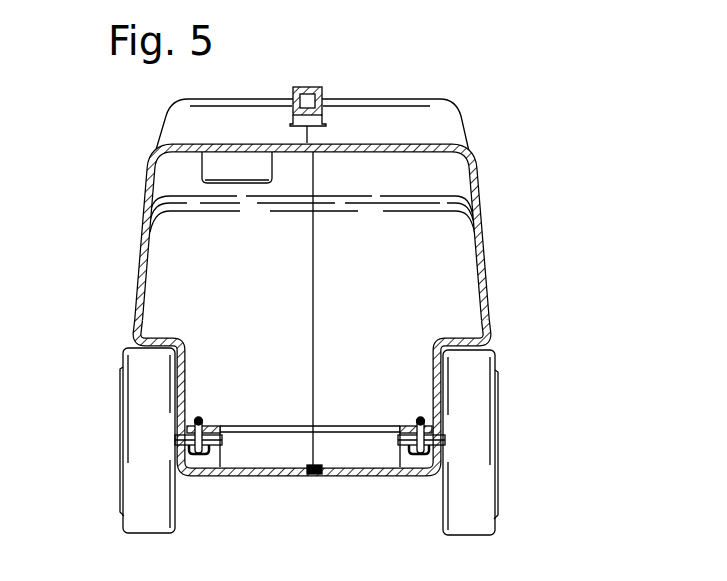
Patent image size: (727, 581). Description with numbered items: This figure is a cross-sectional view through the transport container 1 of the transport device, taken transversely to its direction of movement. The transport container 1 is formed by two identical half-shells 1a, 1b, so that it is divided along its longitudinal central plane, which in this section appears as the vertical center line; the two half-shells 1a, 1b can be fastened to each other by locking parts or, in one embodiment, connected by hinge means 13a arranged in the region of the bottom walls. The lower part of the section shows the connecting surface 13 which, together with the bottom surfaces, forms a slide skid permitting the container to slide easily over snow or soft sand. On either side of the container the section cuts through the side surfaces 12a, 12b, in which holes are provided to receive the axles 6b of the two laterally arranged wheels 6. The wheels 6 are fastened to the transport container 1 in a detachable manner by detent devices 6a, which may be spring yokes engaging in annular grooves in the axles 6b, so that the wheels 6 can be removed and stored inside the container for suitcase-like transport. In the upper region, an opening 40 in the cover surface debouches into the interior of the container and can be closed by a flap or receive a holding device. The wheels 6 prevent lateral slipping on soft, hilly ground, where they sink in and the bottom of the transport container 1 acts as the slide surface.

The transport container 1 is at (427, 96).
The half-shell 1a is at (476, 179).
The half-shell 1b is at (147, 187).
The side surface 12a is at (488, 313).
The side surface 12b is at (131, 313).
The connecting surface 13 is at (288, 477).
The hinge means 13a is at (317, 475).
The opening 40 is at (251, 184).
The wheel 6 is at (131, 395).
The detent device 6a is at (199, 421).
The axle 6b is at (221, 443).